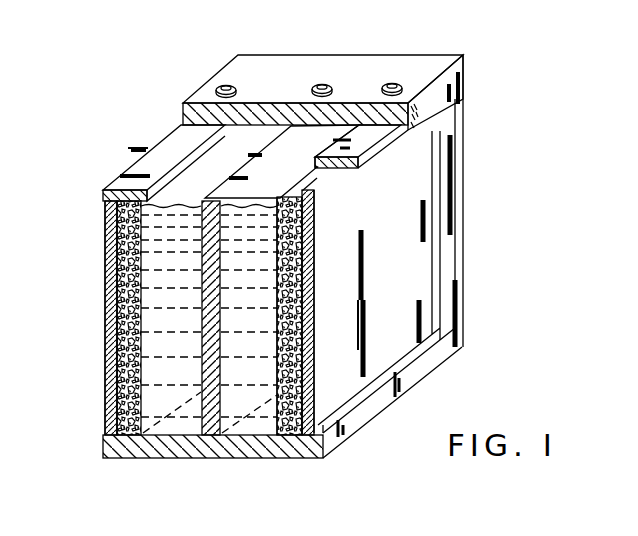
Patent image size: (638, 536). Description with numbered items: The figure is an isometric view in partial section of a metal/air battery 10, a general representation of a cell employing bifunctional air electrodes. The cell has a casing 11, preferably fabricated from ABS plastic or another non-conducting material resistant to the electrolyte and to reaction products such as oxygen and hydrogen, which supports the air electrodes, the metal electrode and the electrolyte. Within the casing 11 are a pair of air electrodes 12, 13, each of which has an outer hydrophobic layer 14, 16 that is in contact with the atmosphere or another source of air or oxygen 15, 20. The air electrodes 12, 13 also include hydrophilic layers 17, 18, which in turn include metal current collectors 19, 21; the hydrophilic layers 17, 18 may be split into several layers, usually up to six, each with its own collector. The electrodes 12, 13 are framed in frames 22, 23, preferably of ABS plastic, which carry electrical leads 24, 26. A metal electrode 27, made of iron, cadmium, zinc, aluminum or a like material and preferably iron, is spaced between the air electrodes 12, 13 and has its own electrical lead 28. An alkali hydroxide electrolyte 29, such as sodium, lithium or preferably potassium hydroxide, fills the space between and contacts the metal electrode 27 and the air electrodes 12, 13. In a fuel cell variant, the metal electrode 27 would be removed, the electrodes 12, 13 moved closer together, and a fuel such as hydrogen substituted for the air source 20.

The battery 10 is at (466, 232).
The casing 11 is at (456, 340).
The air electrode 12 is at (315, 391).
The air electrode 13 is at (104, 397).
The outer hydrophobic layer 14 is at (308, 222).
The source of air or oxygen 15 is at (392, 257).
The outer hydrophobic layer 16 is at (110, 222).
The hydrophilic layer 17 is at (302, 337).
The hydrophilic layer 18 is at (110, 350).
The metal current collector 19 is at (298, 280).
The source of air or oxygen 20 is at (100, 260).
The metal current collector 21 is at (118, 306).
The frame 22 is at (378, 153).
The frame 23 is at (160, 150).
The electrical lead 24 is at (396, 84).
The electrical lead 26 is at (236, 85).
The metal electrode 27 is at (215, 460).
The electrical lead 28 is at (330, 84).
The electrolyte 29 is at (160, 205).